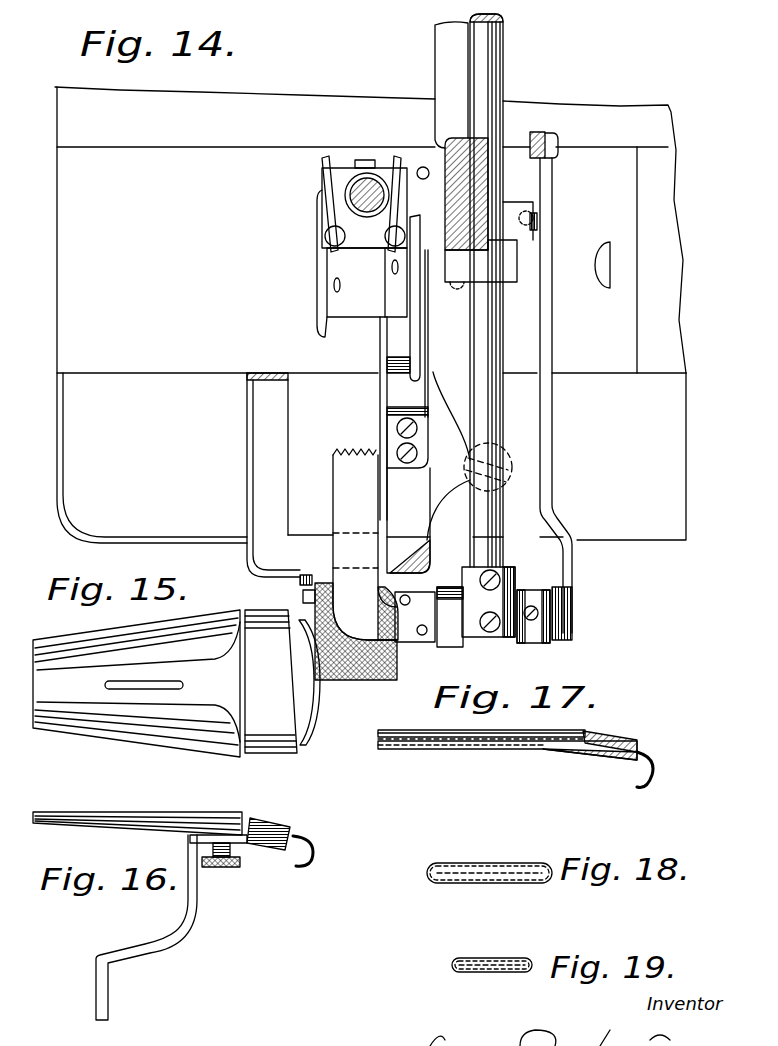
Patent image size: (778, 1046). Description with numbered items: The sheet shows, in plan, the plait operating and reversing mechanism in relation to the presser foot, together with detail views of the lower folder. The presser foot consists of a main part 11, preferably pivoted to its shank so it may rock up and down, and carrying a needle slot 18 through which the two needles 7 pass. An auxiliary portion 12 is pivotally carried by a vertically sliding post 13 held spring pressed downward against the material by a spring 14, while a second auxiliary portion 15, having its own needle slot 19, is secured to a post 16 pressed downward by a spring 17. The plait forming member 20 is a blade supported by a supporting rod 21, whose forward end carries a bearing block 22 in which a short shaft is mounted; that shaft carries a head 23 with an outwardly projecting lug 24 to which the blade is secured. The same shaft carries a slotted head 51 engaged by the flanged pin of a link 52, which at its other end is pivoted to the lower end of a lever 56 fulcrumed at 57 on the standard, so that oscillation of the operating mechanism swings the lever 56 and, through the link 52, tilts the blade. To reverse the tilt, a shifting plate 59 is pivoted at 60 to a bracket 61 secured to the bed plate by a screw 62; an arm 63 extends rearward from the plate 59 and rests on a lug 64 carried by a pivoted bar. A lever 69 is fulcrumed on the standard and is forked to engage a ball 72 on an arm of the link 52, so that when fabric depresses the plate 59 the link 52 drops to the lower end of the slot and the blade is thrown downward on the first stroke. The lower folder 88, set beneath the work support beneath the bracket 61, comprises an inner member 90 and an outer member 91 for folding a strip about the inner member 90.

In FIG. 14, the needles 7 is at (334, 287).
In FIG. 14, the main part of presser foot 11 is at (352, 305).
In FIG. 14, the auxiliary portion of presser foot 12 is at (317, 270).
In FIG. 14, the vertically sliding post 13 is at (325, 236).
In FIG. 14, the spring 14 is at (325, 186).
In FIG. 14, the second auxiliary portion of presser foot 15 is at (402, 298).
In FIG. 14, the post 16 is at (385, 236).
In FIG. 14, the spring 17 is at (423, 167).
In FIG. 14, the needle slot 18 is at (341, 285).
In FIG. 14, the needle slot 19 is at (391, 267).
In FIG. 14, the plait forming member 20 is at (365, 544).
In FIG. 14, the supporting rod 21 is at (503, 352).
In FIG. 14, the bearing block 22 is at (484, 640).
In FIG. 14, the head 23 is at (440, 650).
In FIG. 14, the lug 24 is at (405, 608).
In FIG. 14, the slotted head 51 is at (565, 642).
In FIG. 14, the link 52 is at (553, 320).
In FIG. 14, the lever 56 is at (533, 133).
In FIG. 14, the fulcrum 57 is at (527, 645).
In FIG. 14, the shifting plate 59 is at (273, 475).
In FIG. 14, the pivot 60 is at (395, 368).
In FIG. 14, the bracket 61 is at (430, 447).
In FIG. 14, the screw 62 is at (470, 480).
In FIG. 14, the arm 63 is at (429, 336).
In FIG. 14, the lug 64 is at (437, 227).
In FIG. 14, the lever 69 is at (518, 208).
In FIG. 16, the lever 69 is at (178, 938).
In FIG. 14, the ball 72 is at (537, 218).
In FIG. 14, the lower folder 88 is at (296, 590).
In FIG. 15, the lower folder 88 is at (143, 730).
In FIG. 16, the lower folder 88 is at (146, 812).
In FIG. 17, the lower folder 88 is at (415, 748).
In FIG. 18, the lower folder 88 is at (453, 958).
In FIG. 19, the lower folder 88 is at (492, 965).
In FIG. 15, the inner member 90 is at (161, 688).
In FIG. 17, the inner member 90 is at (477, 741).
In FIG. 18, the inner member 90 is at (492, 863).
In FIG. 19, the inner member 90 is at (493, 958).
In FIG. 17, the outer member 91 is at (503, 750).
In FIG. 18, the outer member 91 is at (510, 884).
In FIG. 19, the outer member 91 is at (491, 973).